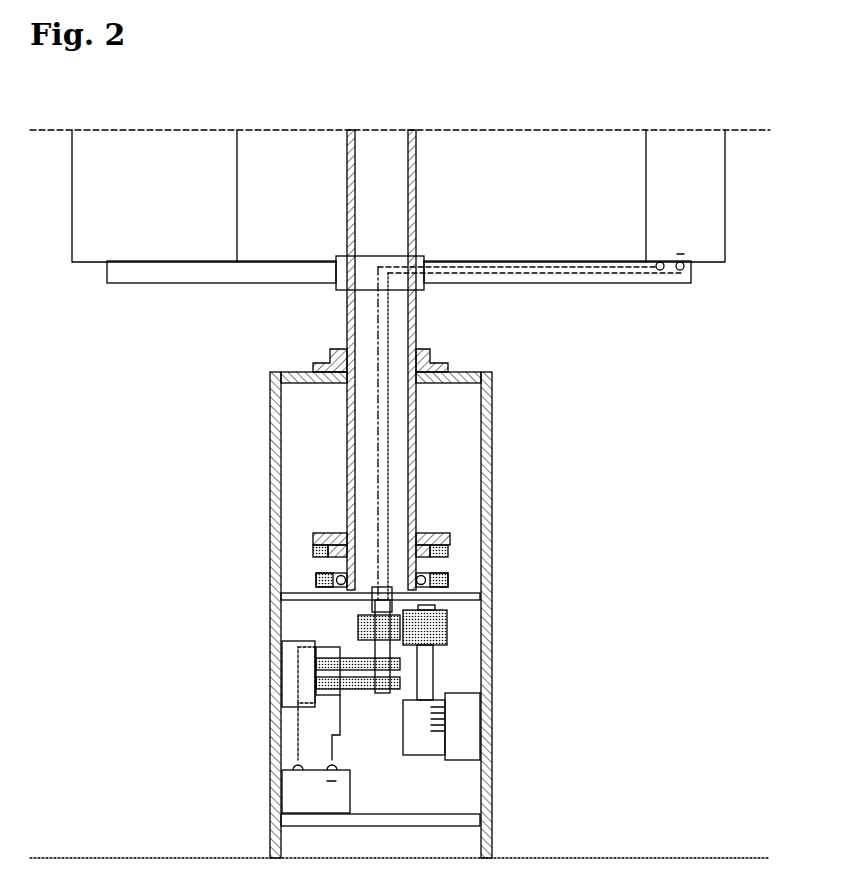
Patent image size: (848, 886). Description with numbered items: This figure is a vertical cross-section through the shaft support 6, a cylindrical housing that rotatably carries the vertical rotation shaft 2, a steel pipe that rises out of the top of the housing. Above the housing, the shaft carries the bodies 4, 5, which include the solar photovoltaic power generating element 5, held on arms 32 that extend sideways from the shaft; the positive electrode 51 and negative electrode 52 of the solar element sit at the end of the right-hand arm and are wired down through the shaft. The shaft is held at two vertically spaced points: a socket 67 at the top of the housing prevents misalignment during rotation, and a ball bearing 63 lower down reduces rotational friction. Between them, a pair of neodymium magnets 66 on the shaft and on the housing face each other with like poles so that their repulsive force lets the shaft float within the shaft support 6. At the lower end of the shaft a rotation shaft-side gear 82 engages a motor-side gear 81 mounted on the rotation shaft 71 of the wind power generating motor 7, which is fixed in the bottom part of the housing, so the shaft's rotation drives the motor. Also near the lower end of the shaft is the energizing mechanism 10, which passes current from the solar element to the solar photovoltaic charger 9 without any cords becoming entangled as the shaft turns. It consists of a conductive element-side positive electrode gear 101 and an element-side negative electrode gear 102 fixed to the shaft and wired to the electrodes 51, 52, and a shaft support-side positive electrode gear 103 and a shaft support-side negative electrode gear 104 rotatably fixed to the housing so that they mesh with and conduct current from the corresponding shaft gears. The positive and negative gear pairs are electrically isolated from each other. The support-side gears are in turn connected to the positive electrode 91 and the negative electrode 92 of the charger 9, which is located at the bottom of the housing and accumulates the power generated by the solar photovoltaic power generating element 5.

The vertical rotation shaft 2 is at (387, 198).
The upper body 4 is at (163, 209).
The solar photovoltaic power generating element 5 is at (691, 199).
The support frame 32 is at (175, 284).
The positive electrode 51 is at (661, 271).
The negative electrode 52 is at (686, 283).
The socket 67 is at (330, 355).
The shaft support 6 is at (270, 450).
The magnet 66 is at (447, 550).
The ball bearing 63 is at (316, 580).
The rotation shaft-side gear 82 is at (423, 594).
The motor-side gear 81 is at (452, 628).
The rotation shaft 71 is at (436, 683).
The wind power generating motor 7 is at (425, 757).
The energizing mechanism 10 is at (302, 673).
The element-side positive electrode gear 101 is at (370, 655).
The element-side negative electrode gear 102 is at (368, 690).
The shaft support-side positive electrode gear 103 is at (300, 642).
The shaft support-side negative electrode gear 104 is at (300, 708).
The solar photovoltaic charger 9 is at (270, 790).
The positive electrode 91 is at (282, 763).
The battery negative terminal 92 is at (332, 771).